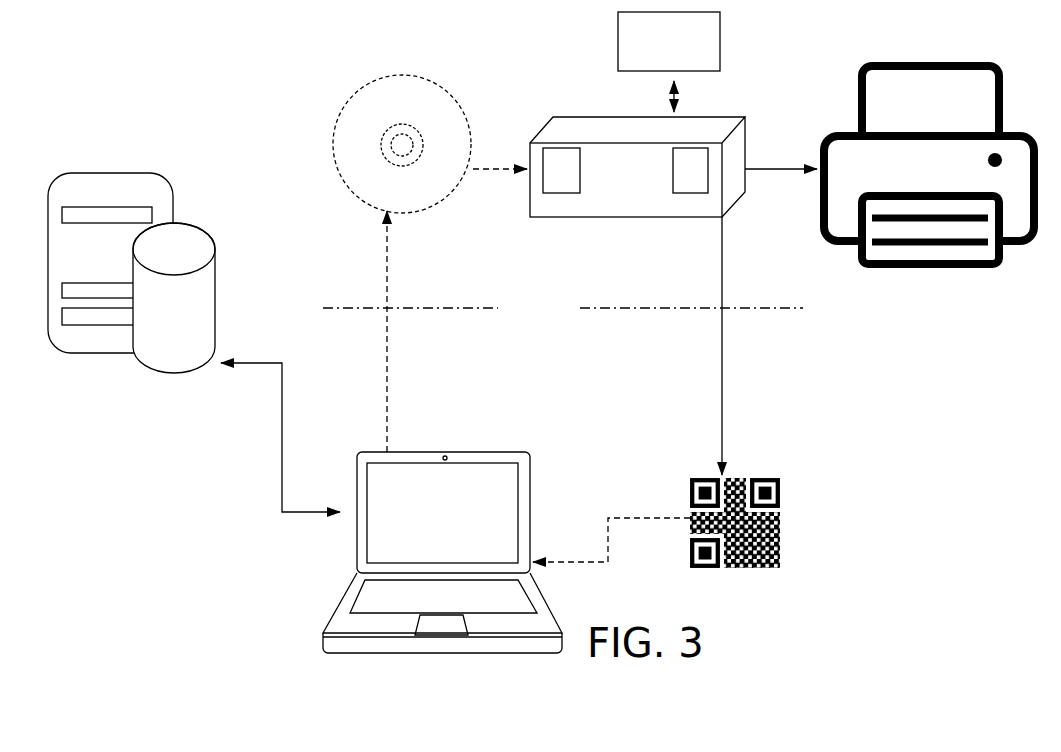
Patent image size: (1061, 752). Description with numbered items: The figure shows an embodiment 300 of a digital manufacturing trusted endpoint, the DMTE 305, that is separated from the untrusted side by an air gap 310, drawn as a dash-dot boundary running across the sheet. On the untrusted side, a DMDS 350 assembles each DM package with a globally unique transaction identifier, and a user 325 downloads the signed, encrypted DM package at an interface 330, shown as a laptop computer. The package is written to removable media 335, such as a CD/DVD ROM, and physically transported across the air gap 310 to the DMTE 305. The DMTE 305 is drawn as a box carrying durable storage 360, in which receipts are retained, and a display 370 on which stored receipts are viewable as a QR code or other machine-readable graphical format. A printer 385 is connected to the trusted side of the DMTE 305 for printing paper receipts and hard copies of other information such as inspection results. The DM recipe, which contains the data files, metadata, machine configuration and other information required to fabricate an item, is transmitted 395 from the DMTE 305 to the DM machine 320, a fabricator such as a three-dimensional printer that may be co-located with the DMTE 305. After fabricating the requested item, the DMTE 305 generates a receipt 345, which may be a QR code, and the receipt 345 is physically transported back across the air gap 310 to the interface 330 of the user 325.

The embodiment 300 is at (252, 141).
The DMTE 305 is at (637, 167).
The air gap 310 is at (563, 311).
The DM machine 320 is at (929, 165).
The user 325 is at (487, 450).
The interface 330 is at (442, 552).
The removable media 335 is at (402, 144).
The receipt 345 is at (737, 507).
The DMDS 350 is at (131, 273).
The durable storage 360 is at (560, 160).
The display 370 is at (690, 157).
The printer 385 is at (669, 41).
The transmission 395 is at (765, 175).